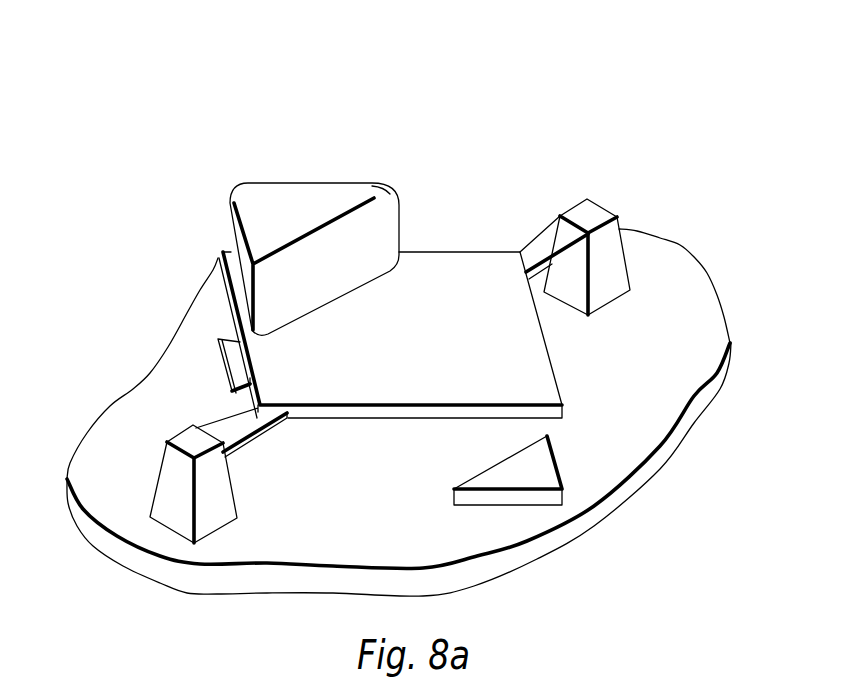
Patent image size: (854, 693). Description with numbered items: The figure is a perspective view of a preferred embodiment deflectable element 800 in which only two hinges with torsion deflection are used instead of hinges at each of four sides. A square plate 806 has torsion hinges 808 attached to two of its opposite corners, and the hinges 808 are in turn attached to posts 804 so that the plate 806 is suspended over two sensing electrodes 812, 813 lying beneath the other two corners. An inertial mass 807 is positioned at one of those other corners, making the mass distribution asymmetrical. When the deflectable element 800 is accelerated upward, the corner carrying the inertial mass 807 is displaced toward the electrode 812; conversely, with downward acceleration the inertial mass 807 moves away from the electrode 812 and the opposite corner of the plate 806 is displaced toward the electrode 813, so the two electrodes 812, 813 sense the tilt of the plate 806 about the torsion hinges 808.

The deflectable element 800 is at (178, 185).
The post 804 is at (614, 247).
The square plate 806 is at (456, 257).
The inertial mass 807 is at (288, 193).
The torsion hinge 808 is at (540, 237).
The sensing electrode 812 is at (226, 374).
The sensing electrode 813 is at (514, 506).